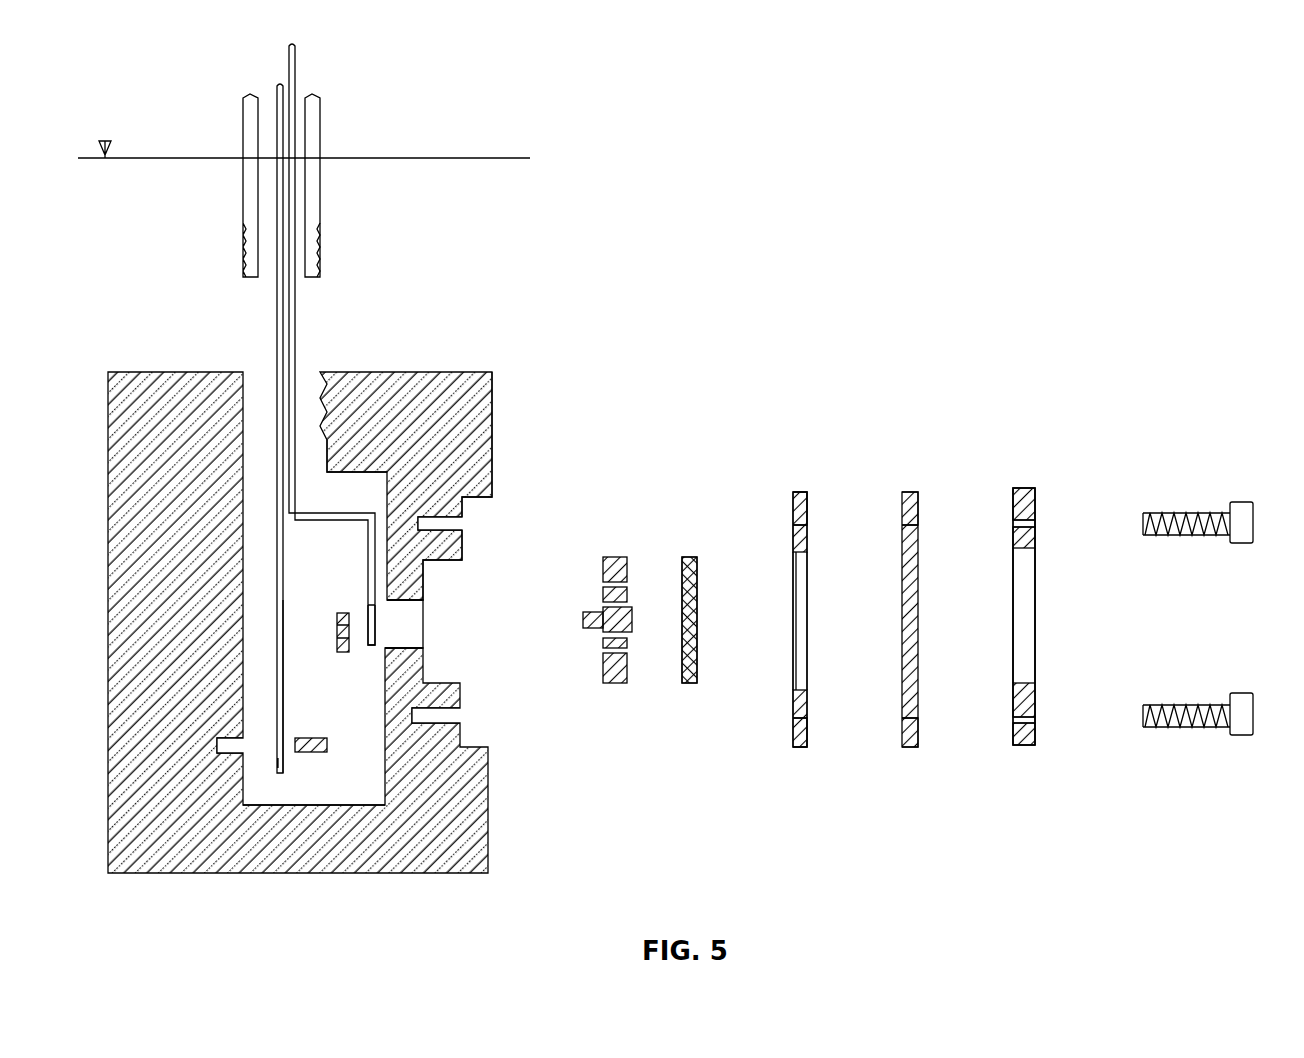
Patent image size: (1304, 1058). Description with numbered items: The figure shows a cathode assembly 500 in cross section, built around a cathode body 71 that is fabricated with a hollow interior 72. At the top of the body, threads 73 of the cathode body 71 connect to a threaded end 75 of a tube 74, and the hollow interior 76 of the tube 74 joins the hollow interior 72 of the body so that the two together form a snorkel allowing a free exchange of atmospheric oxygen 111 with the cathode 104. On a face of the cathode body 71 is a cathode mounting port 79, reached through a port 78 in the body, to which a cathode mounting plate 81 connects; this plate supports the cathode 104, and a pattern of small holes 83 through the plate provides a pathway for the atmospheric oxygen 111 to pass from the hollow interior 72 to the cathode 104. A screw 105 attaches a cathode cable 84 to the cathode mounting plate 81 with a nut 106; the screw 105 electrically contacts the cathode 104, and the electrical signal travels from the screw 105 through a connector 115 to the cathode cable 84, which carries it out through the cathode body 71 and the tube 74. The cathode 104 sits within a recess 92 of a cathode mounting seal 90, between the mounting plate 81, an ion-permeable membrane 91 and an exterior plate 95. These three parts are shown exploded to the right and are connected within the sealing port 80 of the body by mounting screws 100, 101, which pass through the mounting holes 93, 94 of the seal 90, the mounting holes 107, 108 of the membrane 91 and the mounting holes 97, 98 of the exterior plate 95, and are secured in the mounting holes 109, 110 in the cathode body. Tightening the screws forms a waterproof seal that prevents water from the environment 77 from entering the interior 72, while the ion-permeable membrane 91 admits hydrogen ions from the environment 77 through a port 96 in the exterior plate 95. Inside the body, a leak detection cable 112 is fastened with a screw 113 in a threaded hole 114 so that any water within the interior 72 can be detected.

The cathode assembly 500 is at (757, 228).
The cathode body 71 is at (318, 880).
The hollow interior 72 is at (297, 721).
The threads 73 is at (243, 384).
The tube 74 is at (319, 207).
The threaded end 75 is at (319, 266).
The hollow interior 76 is at (262, 274).
The environment 77 is at (1265, 618).
The port 78 is at (397, 636).
The cathode mounting port 79 is at (432, 622).
The sealing port 80 is at (472, 582).
The cathode mounting plate 81 is at (627, 562).
The pattern of small holes 83 is at (600, 655).
The cathode cable 84 is at (330, 513).
The cathode mounting seal 90 is at (805, 495).
The ion-permeable membrane 91 is at (915, 495).
The recess 92 is at (810, 620).
The mounting hole 93 is at (810, 525).
The mounting hole 94 is at (810, 718).
The exterior plate 95 is at (1032, 490).
The port 96 is at (1038, 618).
The mounting hole 97 is at (1038, 522).
The mounting hole 98 is at (1038, 718).
The mounting screw 100 is at (1218, 508).
The mounting screw 101 is at (1218, 700).
The cathode 104 is at (697, 560).
The screw 105 is at (579, 615).
The nut 106 is at (345, 613).
The mounting hole 107 is at (921, 525).
The mounting hole 108 is at (921, 718).
The mounting hole 109 is at (462, 522).
The mounting hole 110 is at (466, 715).
The atmospheric oxygen 111 is at (470, 137).
The leak detection cable 112 is at (283, 681).
The screw 113 is at (327, 755).
The threaded hole 114 is at (243, 743).
The connector 115 is at (370, 647).